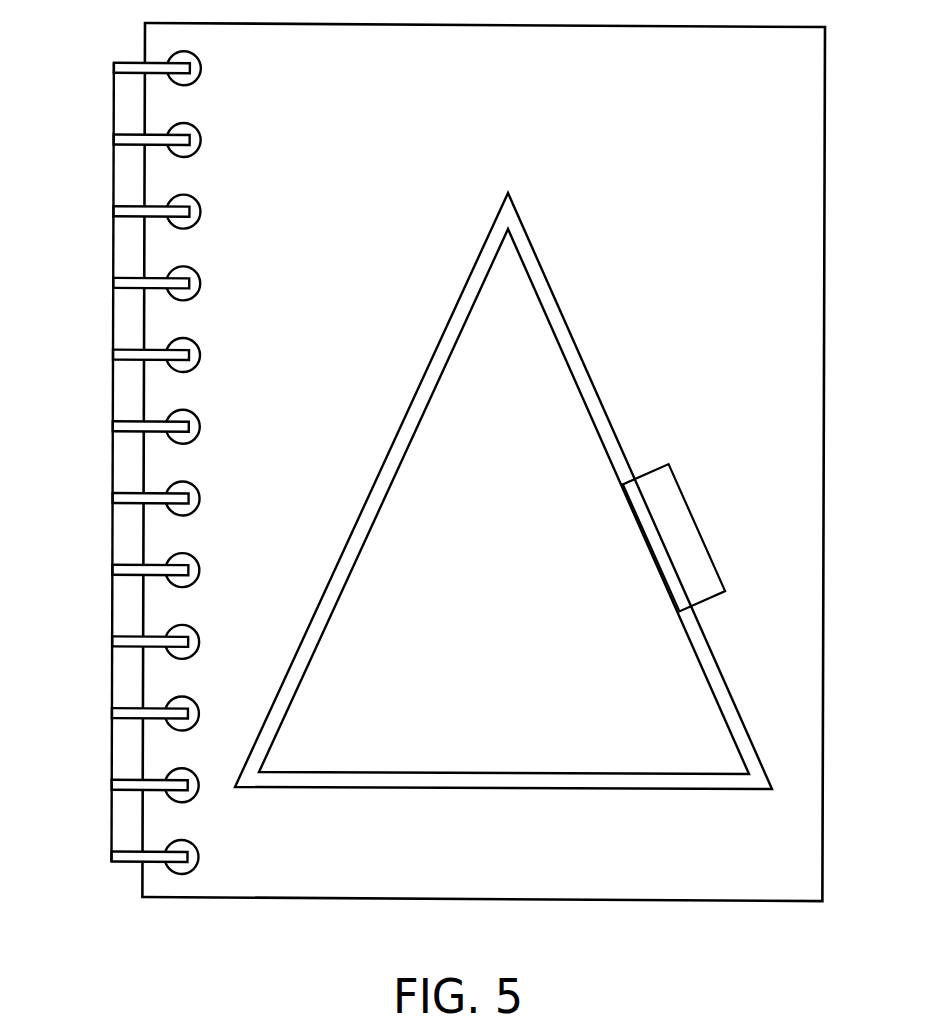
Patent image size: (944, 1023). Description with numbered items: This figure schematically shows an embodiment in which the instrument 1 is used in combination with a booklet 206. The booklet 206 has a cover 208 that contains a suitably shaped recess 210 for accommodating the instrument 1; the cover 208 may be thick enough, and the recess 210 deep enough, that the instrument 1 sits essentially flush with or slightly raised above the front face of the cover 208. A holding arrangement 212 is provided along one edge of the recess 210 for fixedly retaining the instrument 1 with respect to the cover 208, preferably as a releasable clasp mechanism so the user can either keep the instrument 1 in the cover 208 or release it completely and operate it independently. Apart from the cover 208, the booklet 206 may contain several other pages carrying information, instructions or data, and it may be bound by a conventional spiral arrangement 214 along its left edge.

The instrument 1 is at (532, 328).
The booklet 206 is at (460, 495).
The cover 208 is at (810, 57).
The recess 210 is at (526, 253).
The holding arrangement 212 is at (723, 590).
The spiral arrangement 214 is at (113, 108).